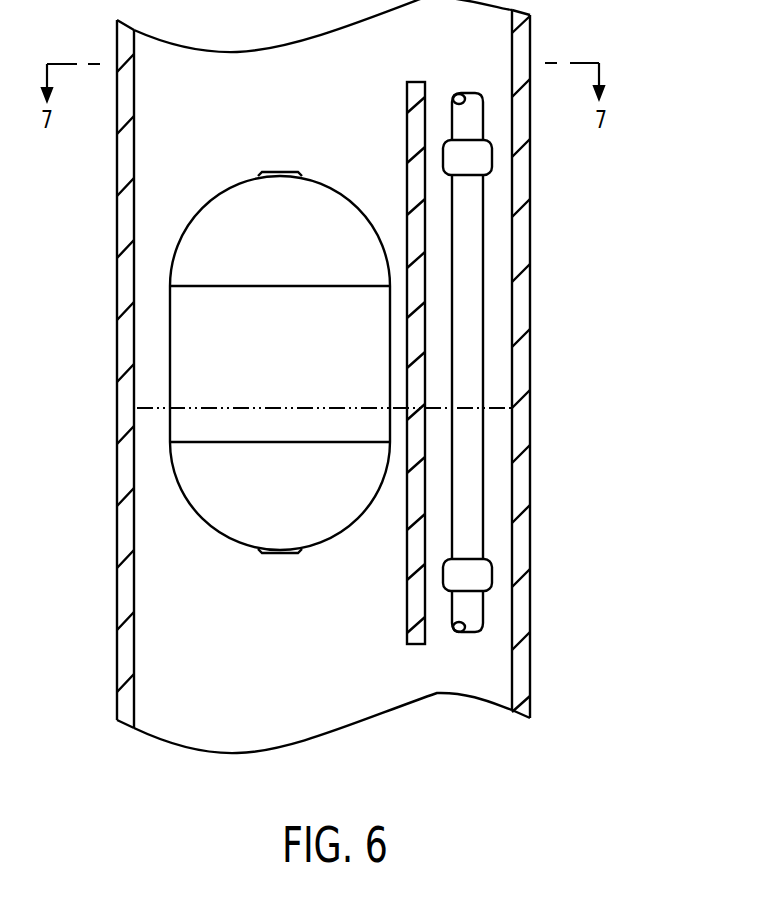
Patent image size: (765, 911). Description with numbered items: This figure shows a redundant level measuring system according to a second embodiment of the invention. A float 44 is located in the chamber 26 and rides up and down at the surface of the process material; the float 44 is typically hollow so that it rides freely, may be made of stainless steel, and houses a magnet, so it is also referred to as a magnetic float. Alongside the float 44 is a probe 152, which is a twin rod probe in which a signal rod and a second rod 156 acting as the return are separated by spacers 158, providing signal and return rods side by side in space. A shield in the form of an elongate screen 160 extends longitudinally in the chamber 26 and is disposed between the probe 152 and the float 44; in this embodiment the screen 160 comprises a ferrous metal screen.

The chamber 26 is at (542, 298).
The float 44 is at (208, 206).
The probe 152 is at (523, 362).
The second rod 156 is at (472, 391).
The spacers 158 is at (484, 571).
The elongate screen 160 is at (414, 80).